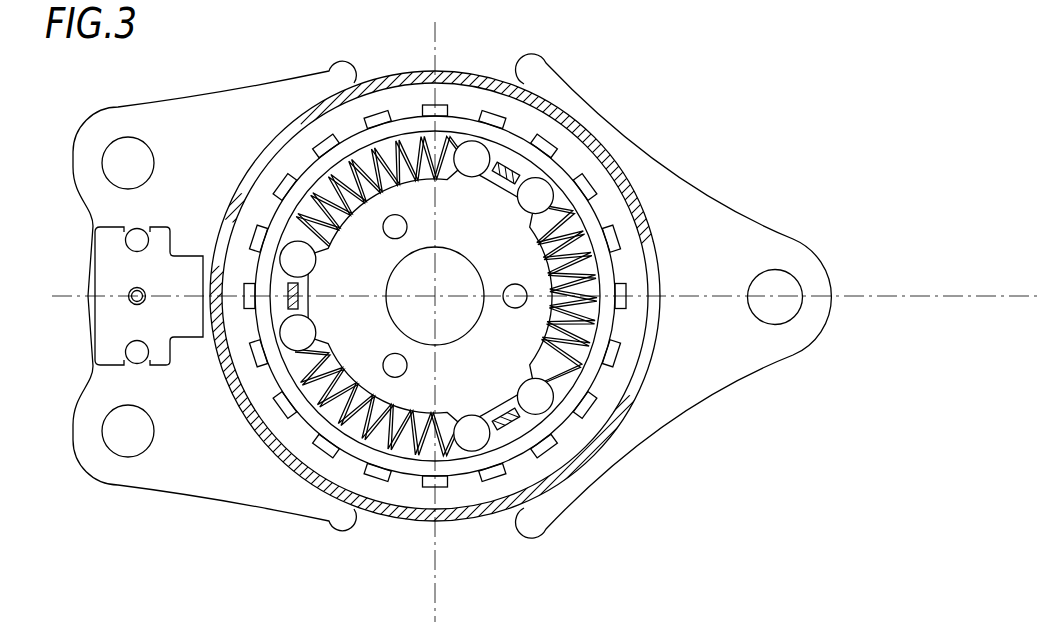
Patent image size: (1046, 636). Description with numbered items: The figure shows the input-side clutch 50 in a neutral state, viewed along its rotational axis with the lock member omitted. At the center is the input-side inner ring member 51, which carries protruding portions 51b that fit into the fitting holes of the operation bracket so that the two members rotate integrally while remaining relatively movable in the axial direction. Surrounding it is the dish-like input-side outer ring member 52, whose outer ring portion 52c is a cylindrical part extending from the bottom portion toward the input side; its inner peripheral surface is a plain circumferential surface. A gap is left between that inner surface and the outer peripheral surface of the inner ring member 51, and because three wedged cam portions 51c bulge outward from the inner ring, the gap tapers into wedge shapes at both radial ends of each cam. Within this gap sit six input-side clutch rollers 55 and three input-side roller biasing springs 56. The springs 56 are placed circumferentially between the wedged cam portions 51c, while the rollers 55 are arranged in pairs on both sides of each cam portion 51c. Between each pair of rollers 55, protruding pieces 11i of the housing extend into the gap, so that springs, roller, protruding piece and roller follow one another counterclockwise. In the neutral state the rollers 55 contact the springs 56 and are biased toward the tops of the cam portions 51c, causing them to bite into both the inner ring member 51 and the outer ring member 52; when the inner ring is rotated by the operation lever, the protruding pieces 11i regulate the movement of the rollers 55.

The input-side clutch 50 is at (312, 102).
The input-side inner ring member 51 is at (524, 238).
The protruding portions 51b is at (393, 372).
The wedged cam portion 51c is at (512, 173).
The input-side outer ring member 52 is at (640, 210).
The outer ring portion 52c is at (483, 462).
The input-side clutch rollers 55 is at (293, 340).
The input-side roller biasing springs 56 is at (398, 140).
The protruding pieces 11i is at (510, 420).